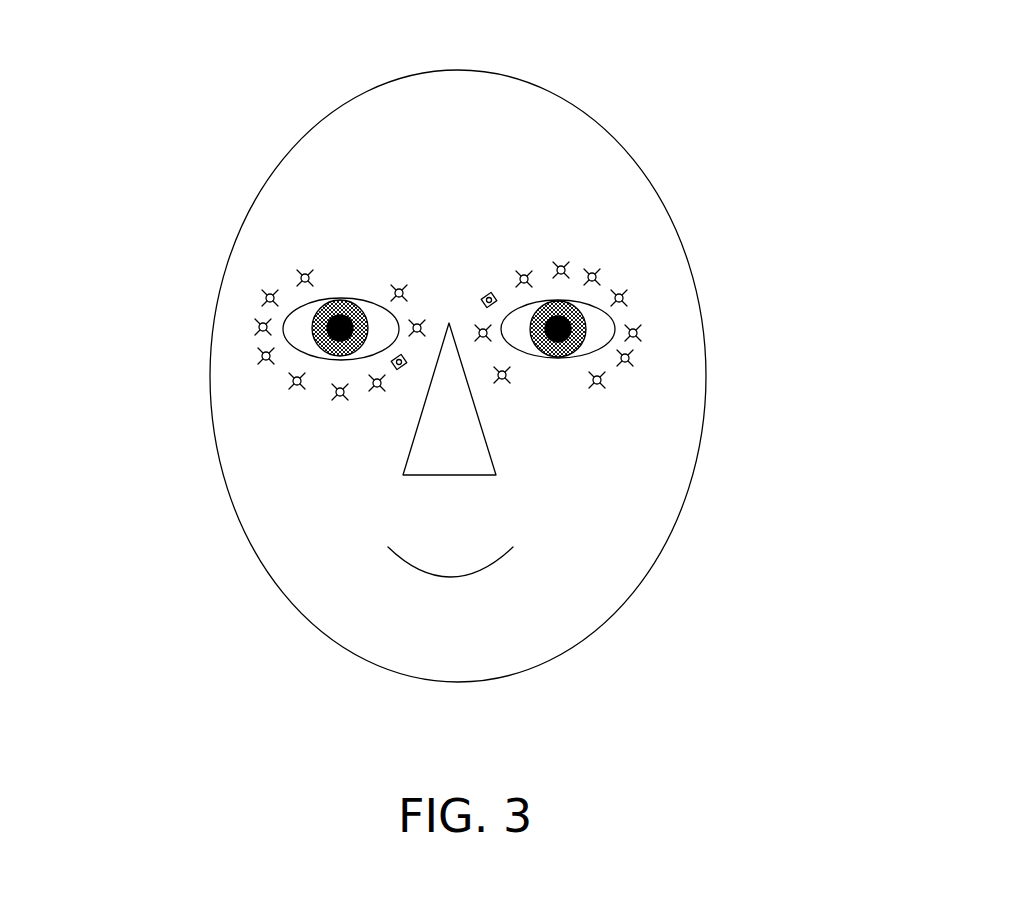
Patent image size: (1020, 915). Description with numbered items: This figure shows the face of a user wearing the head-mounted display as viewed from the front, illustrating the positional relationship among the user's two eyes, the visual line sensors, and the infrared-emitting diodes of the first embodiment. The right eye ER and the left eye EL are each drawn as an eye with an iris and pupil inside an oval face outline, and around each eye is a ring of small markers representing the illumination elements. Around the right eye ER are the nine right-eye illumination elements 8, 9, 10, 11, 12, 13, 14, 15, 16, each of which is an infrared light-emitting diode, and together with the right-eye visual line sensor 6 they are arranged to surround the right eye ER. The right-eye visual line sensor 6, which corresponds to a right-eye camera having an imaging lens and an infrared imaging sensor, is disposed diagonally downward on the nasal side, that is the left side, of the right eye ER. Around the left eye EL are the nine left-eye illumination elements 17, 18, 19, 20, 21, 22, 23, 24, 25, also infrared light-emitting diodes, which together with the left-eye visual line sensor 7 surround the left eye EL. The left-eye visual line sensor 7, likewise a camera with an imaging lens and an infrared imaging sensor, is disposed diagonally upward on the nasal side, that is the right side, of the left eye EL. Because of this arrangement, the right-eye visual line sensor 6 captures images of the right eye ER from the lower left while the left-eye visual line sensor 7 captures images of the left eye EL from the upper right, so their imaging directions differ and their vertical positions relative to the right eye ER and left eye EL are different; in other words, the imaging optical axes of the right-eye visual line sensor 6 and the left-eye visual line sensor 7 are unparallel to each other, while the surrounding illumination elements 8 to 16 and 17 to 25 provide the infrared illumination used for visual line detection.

The right eye ER is at (341, 302).
The left eye EL is at (584, 317).
The right-eye visual line sensor 6 is at (396, 372).
The left-eye visual line sensor 7 is at (485, 294).
The right-eye illumination element 8 is at (301, 277).
The right-eye illumination element 9 is at (266, 296).
The right-eye illumination element 10 is at (260, 325).
The right-eye illumination element 11 is at (262, 356).
The right-eye illumination element 12 is at (294, 382).
The right-eye illumination element 13 is at (340, 396).
The right-eye illumination element 14 is at (377, 387).
The right-eye illumination element 15 is at (419, 324).
The right-eye illumination element 16 is at (399, 289).
The left-eye illumination element 17 is at (600, 387).
The left-eye illumination element 18 is at (629, 364).
The left-eye illumination element 19 is at (640, 336).
The left-eye illumination element 20 is at (624, 298).
The left-eye illumination element 21 is at (596, 274).
The left-eye illumination element 22 is at (564, 268).
The left-eye illumination element 23 is at (526, 276).
The left-eye illumination element 24 is at (482, 340).
The left-eye illumination element 25 is at (505, 381).